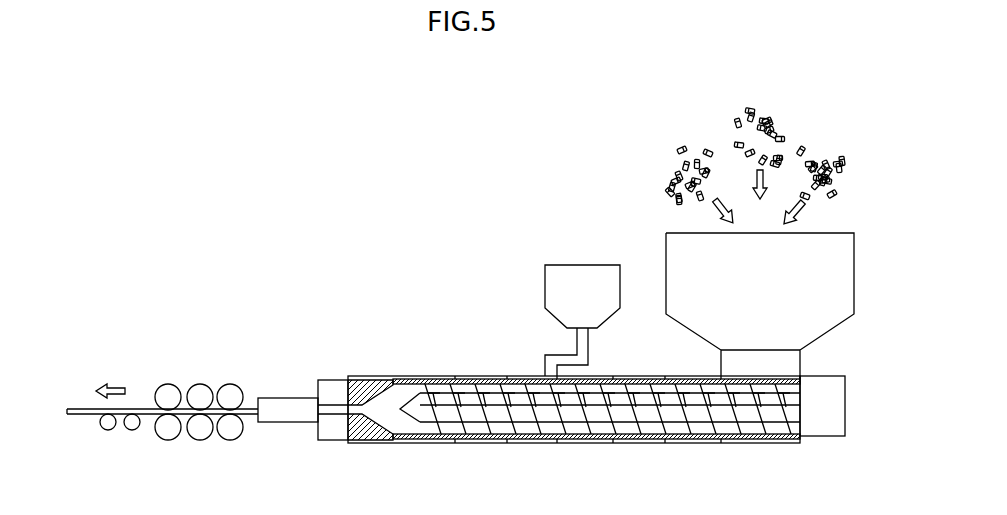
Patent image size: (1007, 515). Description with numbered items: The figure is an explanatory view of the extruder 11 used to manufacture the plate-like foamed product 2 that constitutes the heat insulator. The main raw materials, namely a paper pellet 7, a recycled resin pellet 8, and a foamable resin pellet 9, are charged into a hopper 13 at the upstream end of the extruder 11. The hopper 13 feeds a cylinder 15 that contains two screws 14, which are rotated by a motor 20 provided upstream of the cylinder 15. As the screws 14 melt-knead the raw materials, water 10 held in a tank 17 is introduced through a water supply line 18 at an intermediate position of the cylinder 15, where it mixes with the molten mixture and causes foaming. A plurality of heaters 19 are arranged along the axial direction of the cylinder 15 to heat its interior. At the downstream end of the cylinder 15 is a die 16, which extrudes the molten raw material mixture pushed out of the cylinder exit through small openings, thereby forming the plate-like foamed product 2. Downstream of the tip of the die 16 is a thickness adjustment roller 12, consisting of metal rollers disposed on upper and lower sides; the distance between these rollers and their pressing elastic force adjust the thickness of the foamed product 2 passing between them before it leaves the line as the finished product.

The plate-like foamed product 2 is at (82, 408).
The paper pellet 7 is at (678, 157).
The recycled resin pellet 8 is at (750, 108).
The foamable resin pellet 9 is at (827, 153).
The water 10 is at (577, 287).
The extruder 11 is at (370, 188).
The thickness adjustment roller 12 is at (199, 371).
The hopper 13 is at (665, 243).
The screws 14 is at (458, 390).
The cylinder 15 is at (763, 439).
The die 16 is at (288, 400).
The tank 17 is at (545, 282).
The water supply line 18 is at (575, 347).
The heaters 19 is at (378, 444).
The motor 20 is at (815, 438).